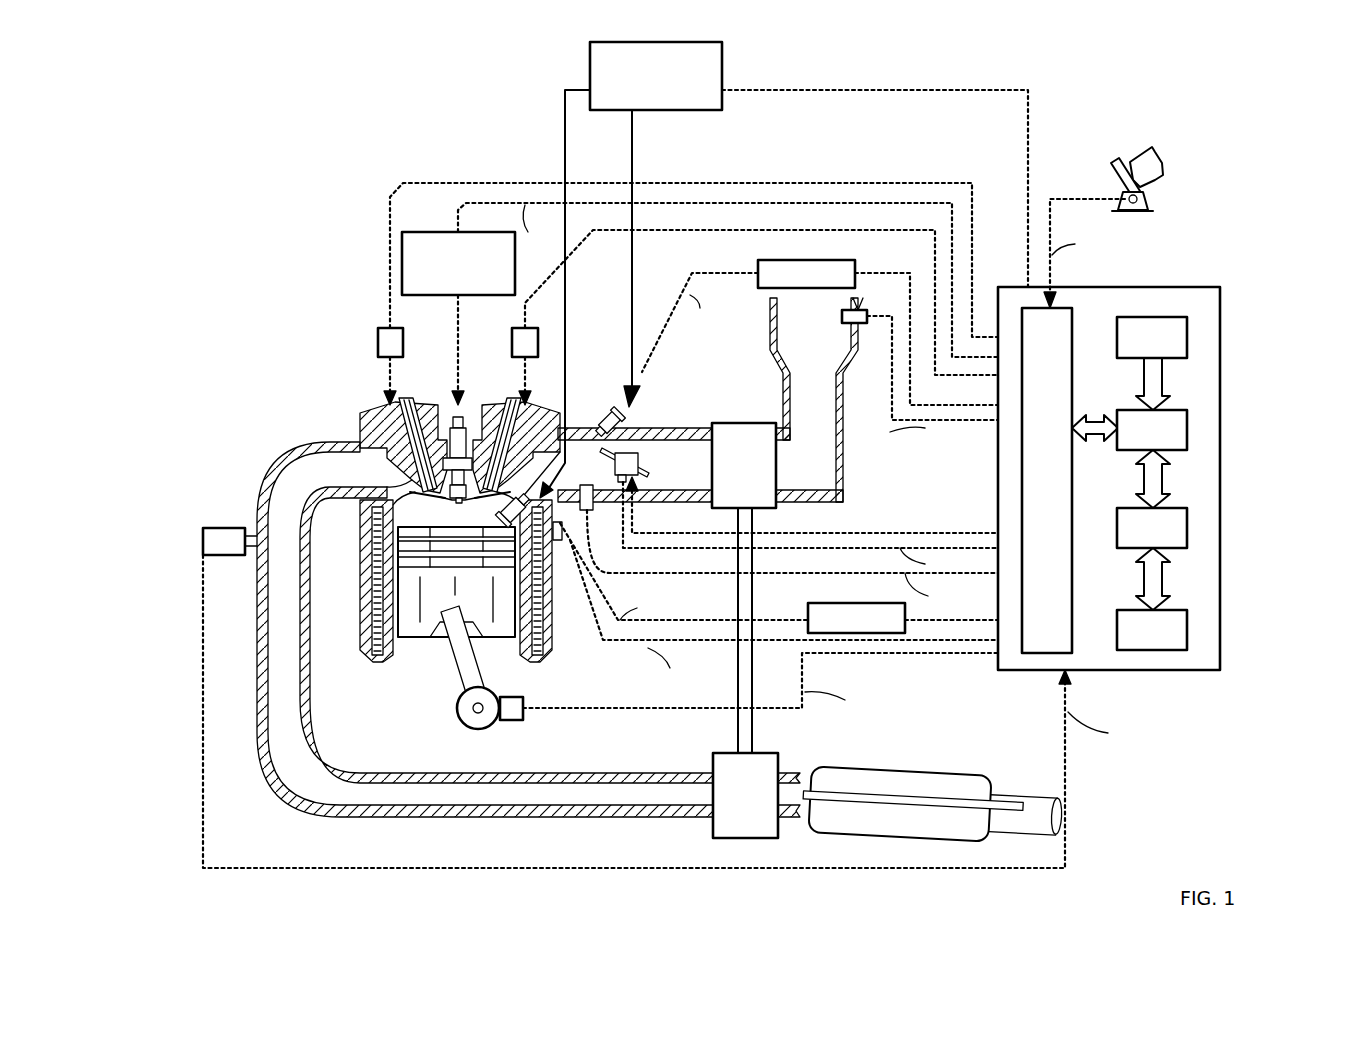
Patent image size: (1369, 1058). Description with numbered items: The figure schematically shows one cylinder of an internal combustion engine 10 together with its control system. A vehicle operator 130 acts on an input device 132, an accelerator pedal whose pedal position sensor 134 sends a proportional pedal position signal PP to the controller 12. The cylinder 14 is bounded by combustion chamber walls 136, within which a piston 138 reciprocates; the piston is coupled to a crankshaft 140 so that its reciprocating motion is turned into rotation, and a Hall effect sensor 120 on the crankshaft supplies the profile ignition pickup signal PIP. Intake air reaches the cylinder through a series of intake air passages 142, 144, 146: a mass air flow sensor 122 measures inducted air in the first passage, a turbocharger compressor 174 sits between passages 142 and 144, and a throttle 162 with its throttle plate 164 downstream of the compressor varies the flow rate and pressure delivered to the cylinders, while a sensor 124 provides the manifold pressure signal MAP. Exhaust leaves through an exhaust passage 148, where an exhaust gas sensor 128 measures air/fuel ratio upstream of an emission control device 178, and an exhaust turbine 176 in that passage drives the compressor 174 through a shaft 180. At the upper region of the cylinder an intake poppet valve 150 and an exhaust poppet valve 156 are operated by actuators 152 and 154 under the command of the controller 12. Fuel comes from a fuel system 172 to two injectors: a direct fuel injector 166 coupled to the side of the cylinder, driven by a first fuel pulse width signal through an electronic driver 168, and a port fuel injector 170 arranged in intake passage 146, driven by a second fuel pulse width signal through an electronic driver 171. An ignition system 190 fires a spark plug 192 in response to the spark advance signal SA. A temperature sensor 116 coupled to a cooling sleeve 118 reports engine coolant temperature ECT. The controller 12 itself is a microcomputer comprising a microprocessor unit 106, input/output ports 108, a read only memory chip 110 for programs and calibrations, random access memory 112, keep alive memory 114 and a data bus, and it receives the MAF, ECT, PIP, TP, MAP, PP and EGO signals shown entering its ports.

The internal combustion engine 10 is at (292, 363).
The controller 12 is at (1148, 465).
The cylinder 14 is at (457, 510).
The microprocessor unit 106 is at (1187, 428).
The input/output ports 108 is at (1072, 318).
The read only memory chip 110 is at (1187, 337).
The random access memory 112 is at (1187, 527).
The keep alive memory 114 is at (1187, 633).
The temperature sensor 116 is at (562, 540).
The cooling sleeve 118 is at (543, 615).
The Hall effect sensor 120 is at (515, 722).
The mass air flow sensor 122 is at (866, 310).
The manifold pressure sensor 124 is at (608, 545).
The exhaust gas sensor 128 is at (203, 537).
The vehicle operator 130 is at (1165, 162).
The input device 132 is at (1113, 172).
The pedal position sensor 134 is at (1150, 203).
The combustion chamber walls 136 is at (395, 640).
The piston 138 is at (448, 605).
The crankshaft 140 is at (466, 722).
The intake air passage 142 is at (837, 344).
The intake air passage 144 is at (704, 474).
The intake air passage 146 is at (605, 474).
The exhaust passage 148 is at (350, 484).
The intake poppet valve 150 is at (492, 458).
The actuator 152 is at (512, 343).
The actuator 154 is at (378, 340).
The exhaust poppet valve 156 is at (362, 432).
The throttle 162 is at (632, 450).
The throttle plate 164 is at (608, 440).
The fuel injector 166 is at (548, 500).
The electronic driver 168 is at (808, 608).
The fuel injector 170 is at (608, 412).
The electronic driver 171 is at (758, 265).
The fuel system 172 is at (722, 48).
The compressor 174 is at (730, 423).
The exhaust turbine 176 is at (713, 825).
The emission control device 178 is at (895, 768).
The shaft 180 is at (758, 718).
The ignition system 190 is at (418, 232).
The spark plug 192 is at (452, 432).